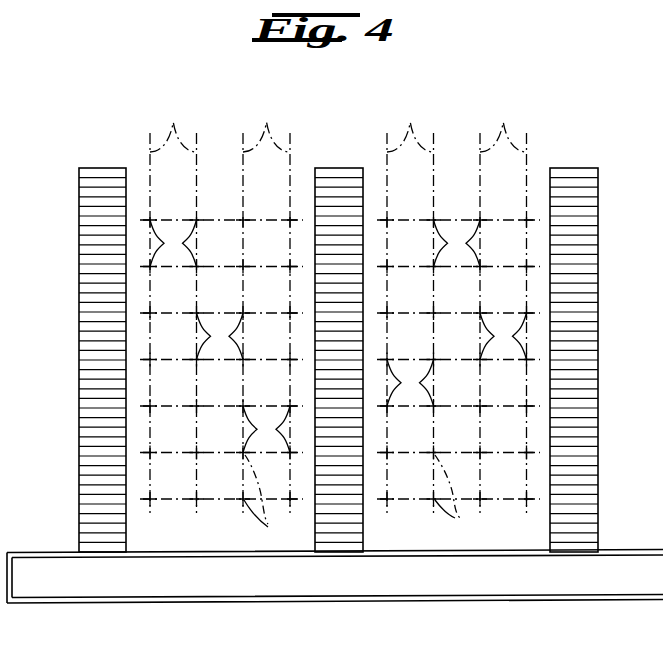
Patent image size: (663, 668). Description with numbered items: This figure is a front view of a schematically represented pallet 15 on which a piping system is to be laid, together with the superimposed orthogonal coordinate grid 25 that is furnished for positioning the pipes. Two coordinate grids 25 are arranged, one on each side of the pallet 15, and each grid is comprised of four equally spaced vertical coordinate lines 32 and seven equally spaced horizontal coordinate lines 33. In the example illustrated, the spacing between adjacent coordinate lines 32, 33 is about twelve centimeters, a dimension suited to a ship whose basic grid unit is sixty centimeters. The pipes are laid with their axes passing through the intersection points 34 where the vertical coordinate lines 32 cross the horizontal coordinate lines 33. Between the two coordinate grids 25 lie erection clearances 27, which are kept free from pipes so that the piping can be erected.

The pallet 15 is at (276, 606).
The orthogonal coordinate grid 25 is at (221, 168).
The erection clearance 27 is at (338, 182).
The vertical coordinate line 32 is at (338, 123).
The horizontal coordinate line 33 is at (363, 501).
The intersection point 34 is at (338, 336).